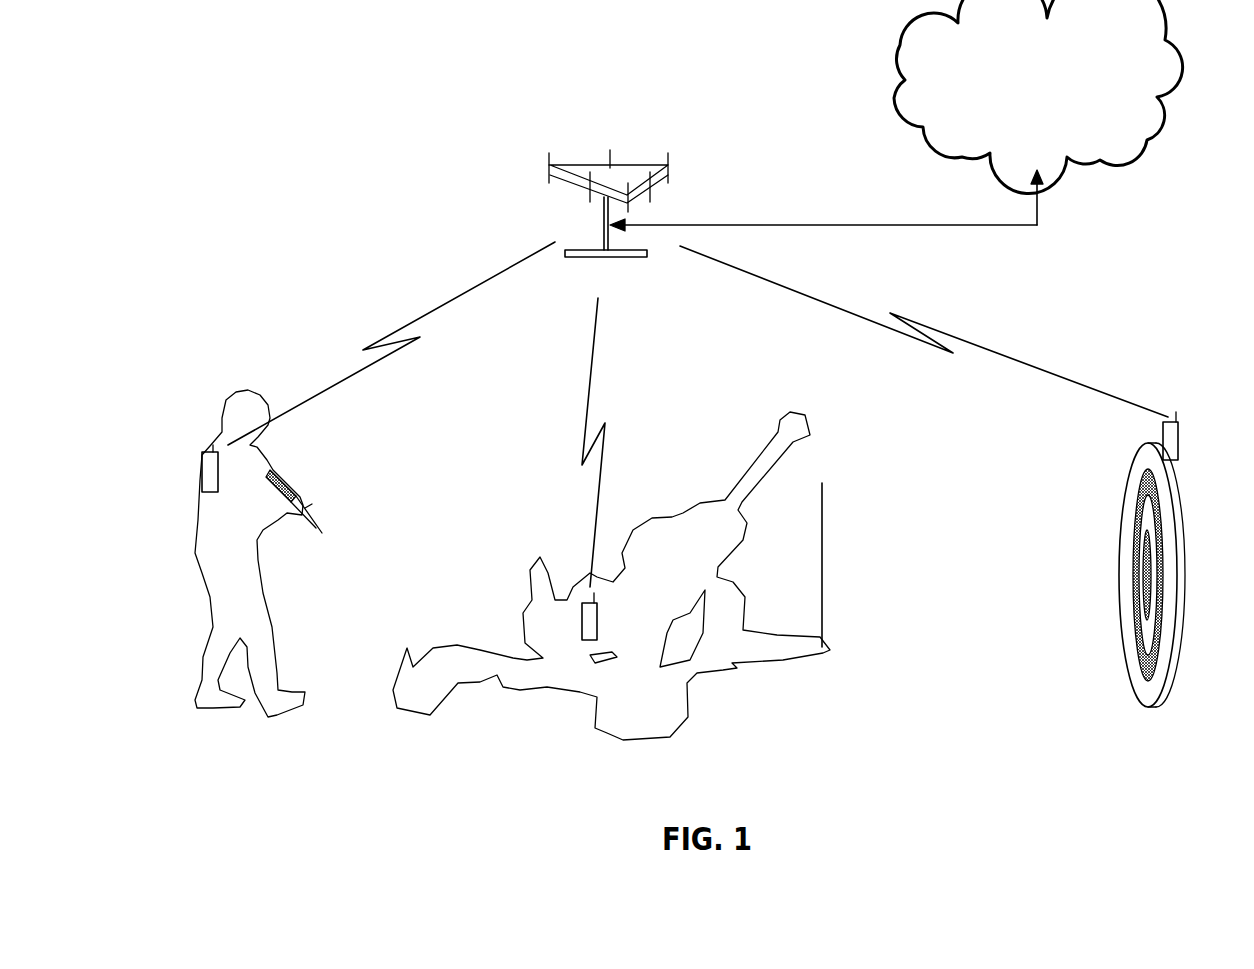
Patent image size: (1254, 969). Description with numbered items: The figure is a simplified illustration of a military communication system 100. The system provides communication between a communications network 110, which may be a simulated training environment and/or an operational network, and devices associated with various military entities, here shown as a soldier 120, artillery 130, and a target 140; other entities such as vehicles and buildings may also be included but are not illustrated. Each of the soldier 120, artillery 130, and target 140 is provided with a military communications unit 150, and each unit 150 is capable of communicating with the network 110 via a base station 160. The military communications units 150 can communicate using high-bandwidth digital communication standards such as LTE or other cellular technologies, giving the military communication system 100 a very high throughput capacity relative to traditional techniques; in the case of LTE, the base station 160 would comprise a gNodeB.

The military communication system 100 is at (290, 143).
The communications network 110 is at (1100, 170).
The soldier 120 is at (277, 702).
The artillery 130 is at (607, 710).
The target 140 is at (1133, 705).
The military communications unit 150 is at (202, 452).
The base station 160 is at (637, 258).